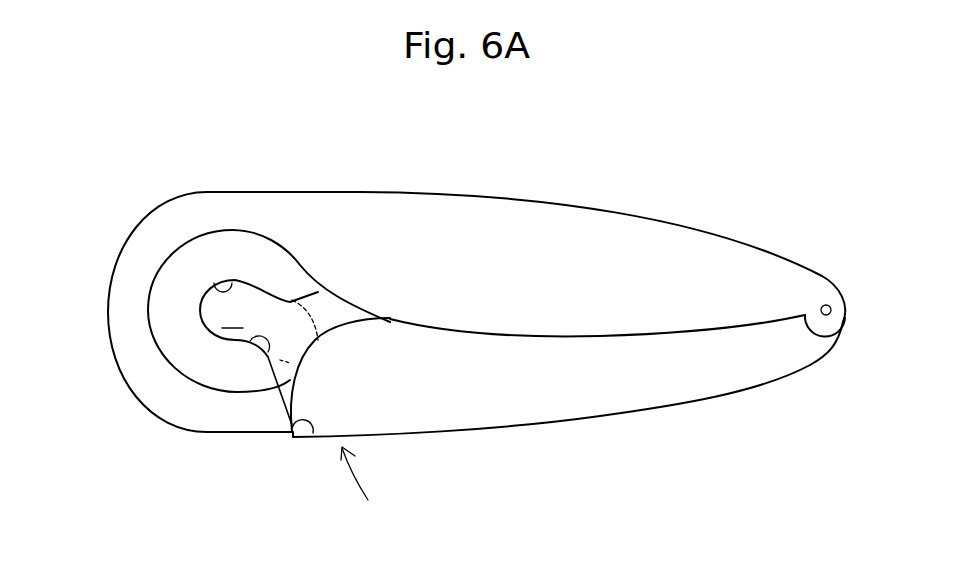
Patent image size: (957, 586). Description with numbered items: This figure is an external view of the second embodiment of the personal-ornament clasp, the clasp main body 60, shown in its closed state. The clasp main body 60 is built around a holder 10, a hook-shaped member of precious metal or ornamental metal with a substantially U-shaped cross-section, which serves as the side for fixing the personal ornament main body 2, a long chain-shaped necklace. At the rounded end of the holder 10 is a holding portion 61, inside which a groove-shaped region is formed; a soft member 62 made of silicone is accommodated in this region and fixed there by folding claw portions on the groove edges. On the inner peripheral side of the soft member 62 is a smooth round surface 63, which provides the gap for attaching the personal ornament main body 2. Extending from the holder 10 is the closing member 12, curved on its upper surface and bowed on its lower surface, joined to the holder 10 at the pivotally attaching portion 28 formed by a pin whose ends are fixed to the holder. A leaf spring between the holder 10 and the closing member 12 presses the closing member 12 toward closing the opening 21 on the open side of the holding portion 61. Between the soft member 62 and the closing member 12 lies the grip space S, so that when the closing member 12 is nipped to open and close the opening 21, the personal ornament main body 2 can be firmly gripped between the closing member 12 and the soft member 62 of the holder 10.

The clasp main body 60 is at (513, 182).
The holder 10 is at (593, 237).
The closing member 12 is at (490, 397).
The pivotally attaching portion 28 is at (828, 303).
The soft member 62 is at (167, 295).
The holding portion 61 is at (232, 280).
The round surface 63 is at (262, 352).
The opening 21 is at (312, 436).
The personal ornament main body 2 is at (290, 325).